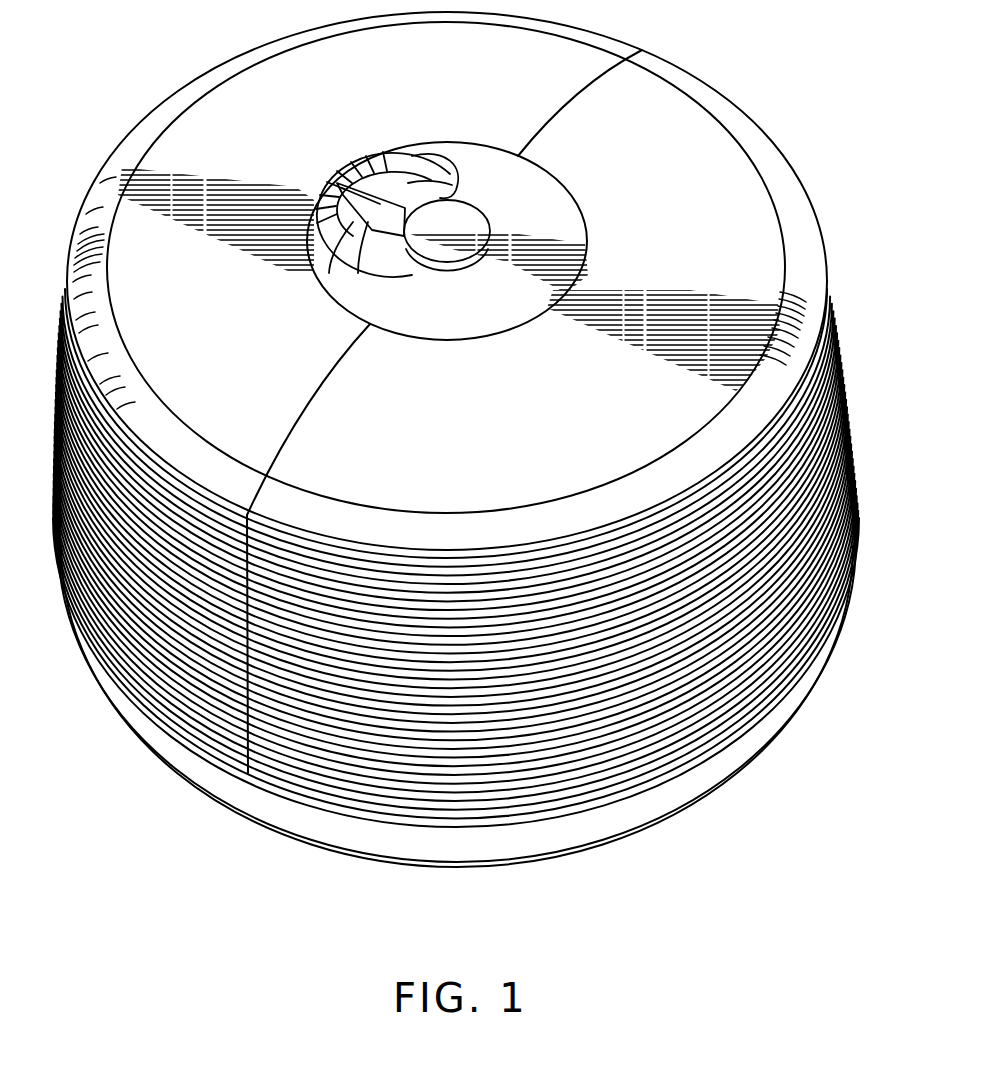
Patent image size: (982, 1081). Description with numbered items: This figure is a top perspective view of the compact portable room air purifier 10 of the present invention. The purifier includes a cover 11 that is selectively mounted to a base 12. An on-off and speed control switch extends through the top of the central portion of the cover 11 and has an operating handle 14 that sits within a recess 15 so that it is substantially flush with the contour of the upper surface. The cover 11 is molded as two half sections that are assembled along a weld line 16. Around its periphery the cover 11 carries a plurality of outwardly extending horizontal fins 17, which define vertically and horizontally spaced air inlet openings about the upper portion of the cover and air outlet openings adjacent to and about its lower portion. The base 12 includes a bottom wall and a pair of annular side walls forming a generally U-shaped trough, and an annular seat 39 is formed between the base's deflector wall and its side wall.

The compact portable room air purifier 10 is at (468, 471).
The cover 11 is at (824, 250).
The base 12 is at (335, 853).
The operating handle 14 is at (366, 219).
The recess 15 is at (376, 258).
The weld line 16 is at (614, 68).
The fins 17 is at (446, 768).
The annular seat 39 is at (742, 762).